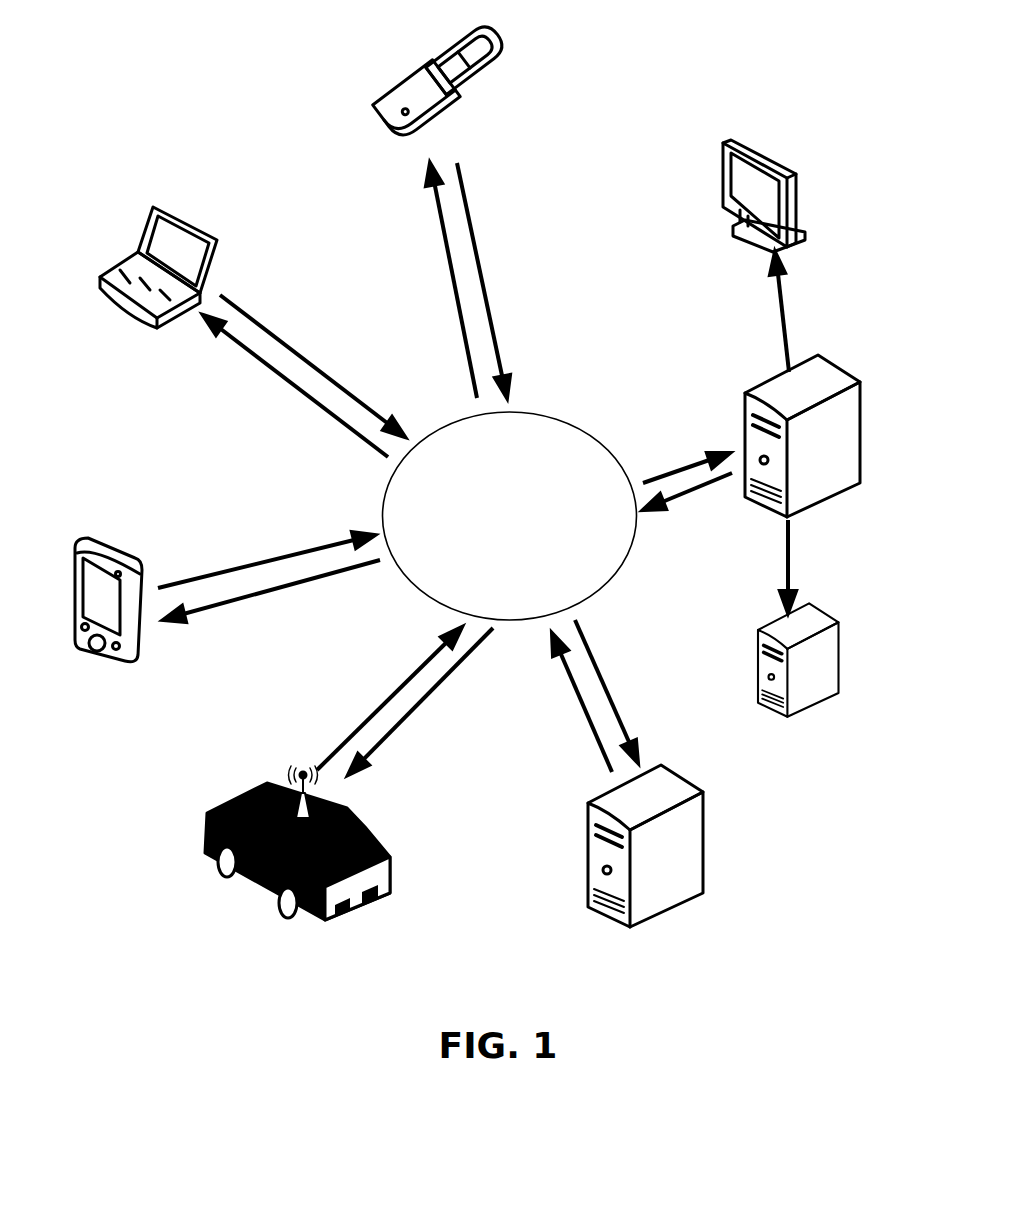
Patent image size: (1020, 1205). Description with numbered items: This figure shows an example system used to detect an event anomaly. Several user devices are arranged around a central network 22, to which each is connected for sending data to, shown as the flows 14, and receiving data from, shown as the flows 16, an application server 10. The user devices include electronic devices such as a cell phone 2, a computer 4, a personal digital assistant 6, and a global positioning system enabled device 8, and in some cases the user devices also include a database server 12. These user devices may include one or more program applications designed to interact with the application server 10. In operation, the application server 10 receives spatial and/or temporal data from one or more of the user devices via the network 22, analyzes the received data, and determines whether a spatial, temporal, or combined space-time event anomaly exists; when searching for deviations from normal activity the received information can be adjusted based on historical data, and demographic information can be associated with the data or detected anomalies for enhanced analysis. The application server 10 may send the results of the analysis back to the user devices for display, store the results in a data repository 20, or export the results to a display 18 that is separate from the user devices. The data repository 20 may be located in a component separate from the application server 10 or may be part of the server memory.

The cell phone 2 is at (402, 80).
The computer 4 is at (137, 227).
The personal digital assistant 6 is at (118, 533).
The global positioning system (GPS) enabled device 8 is at (278, 779).
The application server 10 is at (745, 408).
The database server 12 is at (603, 920).
The sending data 14 is at (444, 466).
The receiving data 16 is at (447, 469).
The display 18 is at (725, 167).
The data repository 20 is at (807, 697).
The network 22 is at (510, 516).